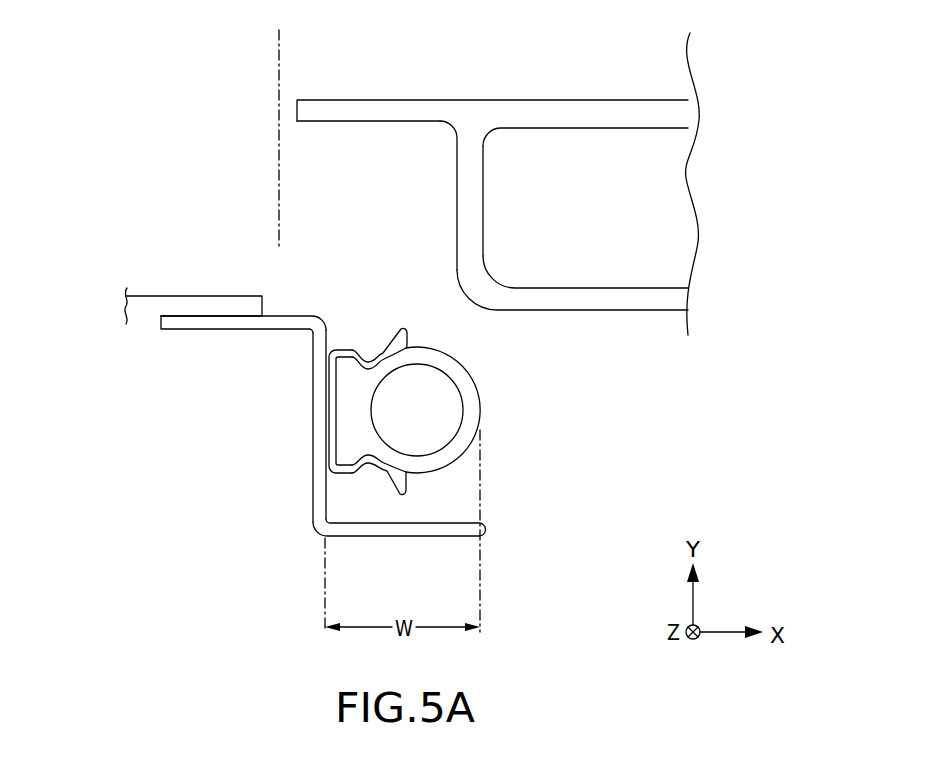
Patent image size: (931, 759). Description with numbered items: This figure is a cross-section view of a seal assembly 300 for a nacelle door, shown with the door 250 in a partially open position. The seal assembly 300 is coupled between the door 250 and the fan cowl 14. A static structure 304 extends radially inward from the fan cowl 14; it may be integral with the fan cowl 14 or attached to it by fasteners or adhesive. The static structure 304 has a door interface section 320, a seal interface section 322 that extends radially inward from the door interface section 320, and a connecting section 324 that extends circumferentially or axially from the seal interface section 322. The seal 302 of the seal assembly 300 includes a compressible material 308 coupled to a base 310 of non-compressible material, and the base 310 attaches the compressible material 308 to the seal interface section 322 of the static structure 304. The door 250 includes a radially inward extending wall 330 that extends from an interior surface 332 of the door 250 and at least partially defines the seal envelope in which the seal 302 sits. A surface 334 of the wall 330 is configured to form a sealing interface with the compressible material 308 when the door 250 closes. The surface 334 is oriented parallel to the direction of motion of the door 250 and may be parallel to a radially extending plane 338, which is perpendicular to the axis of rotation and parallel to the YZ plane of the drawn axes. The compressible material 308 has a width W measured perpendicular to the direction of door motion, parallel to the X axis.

The seal assembly 300 is at (190, 93).
The door 250 is at (430, 112).
The radially inward extending wall 330 is at (518, 215).
The interior surface 332 is at (362, 121).
The surface 334 is at (457, 222).
The radially extending plane 338 is at (279, 193).
The fan cowl 14 is at (203, 305).
The static structure 304 is at (285, 457).
The door interface section 320 is at (230, 323).
The seal interface section 322 is at (322, 463).
The connecting section 324 is at (414, 526).
The seal 302 is at (461, 380).
The compressible material 308 is at (473, 440).
The base 310 is at (378, 352).